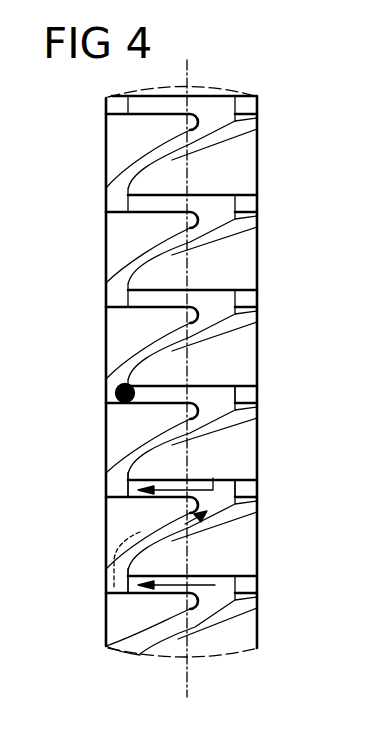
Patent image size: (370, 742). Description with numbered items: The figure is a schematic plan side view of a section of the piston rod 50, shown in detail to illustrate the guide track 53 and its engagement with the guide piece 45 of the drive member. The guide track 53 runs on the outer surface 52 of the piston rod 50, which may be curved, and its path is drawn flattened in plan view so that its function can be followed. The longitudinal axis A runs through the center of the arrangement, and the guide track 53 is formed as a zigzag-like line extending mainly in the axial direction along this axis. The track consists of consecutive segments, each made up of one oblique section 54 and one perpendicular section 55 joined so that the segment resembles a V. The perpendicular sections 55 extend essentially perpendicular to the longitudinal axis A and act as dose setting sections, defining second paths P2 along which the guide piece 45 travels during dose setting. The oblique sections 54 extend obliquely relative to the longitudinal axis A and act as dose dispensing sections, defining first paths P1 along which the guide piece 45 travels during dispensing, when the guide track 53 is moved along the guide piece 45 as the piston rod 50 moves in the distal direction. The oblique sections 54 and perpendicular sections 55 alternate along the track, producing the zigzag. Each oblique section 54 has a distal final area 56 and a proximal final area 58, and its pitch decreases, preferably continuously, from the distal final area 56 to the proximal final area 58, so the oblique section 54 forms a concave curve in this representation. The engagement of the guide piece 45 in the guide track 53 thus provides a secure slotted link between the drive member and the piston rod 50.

The piston rod 50 is at (216, 375).
The outer surface 52 is at (260, 142).
The guide track 53 is at (214, 283).
The oblique section 54 is at (165, 441).
The perpendicular section 55 is at (170, 388).
The distal final area 56 is at (116, 588).
The proximal final area 58 is at (228, 490).
The guide piece 45 is at (116, 392).
The first path P1 is at (138, 545).
The second path P2 is at (207, 581).
The longitudinal axis A is at (188, 686).